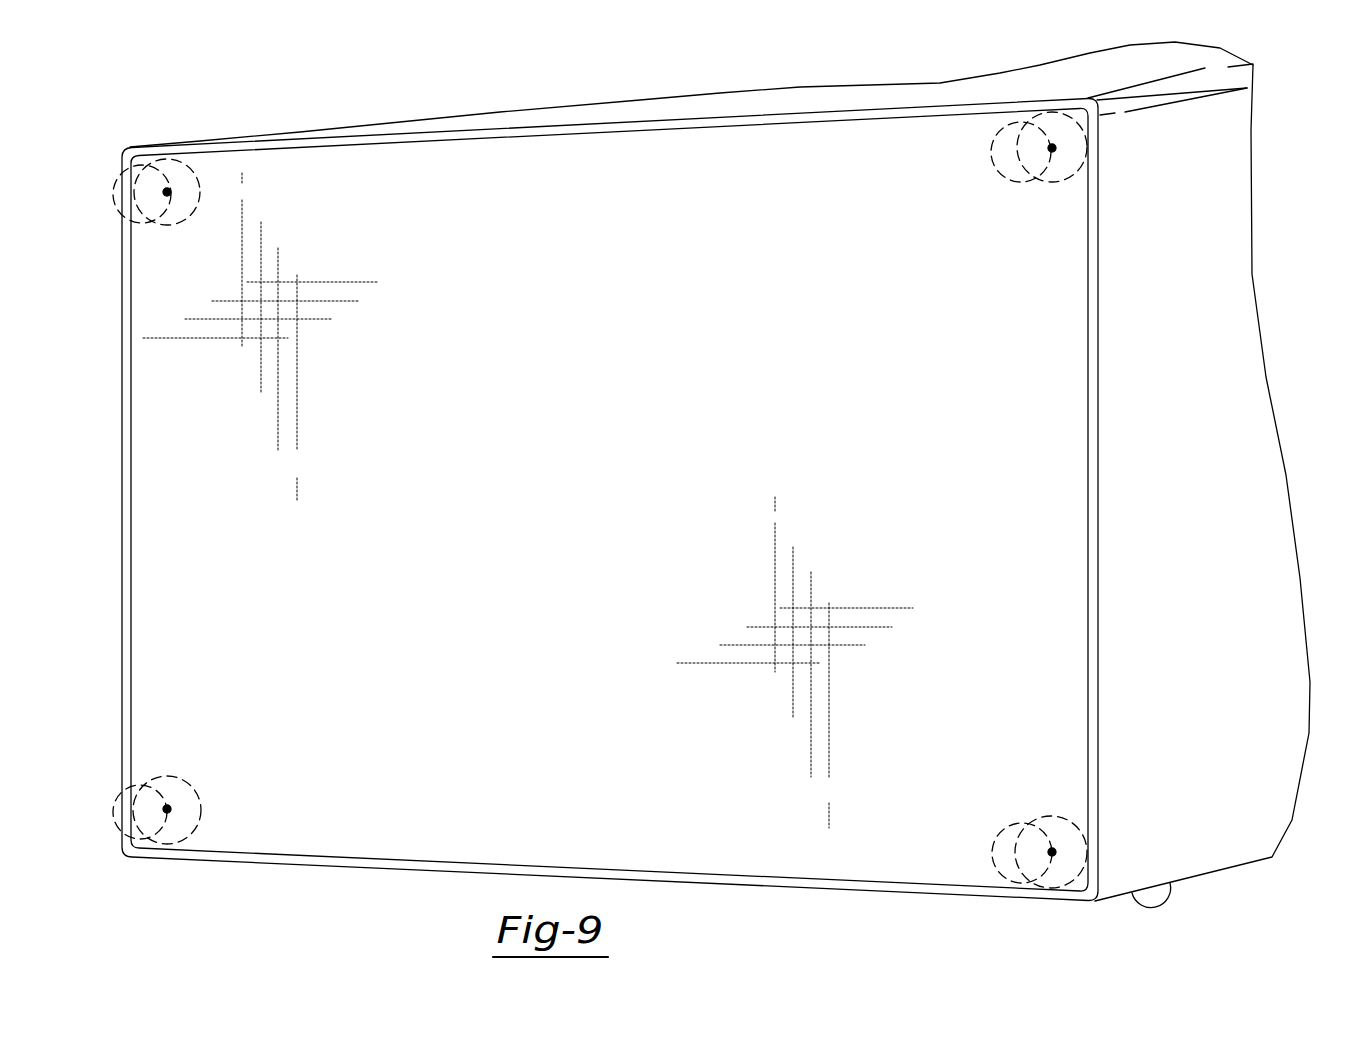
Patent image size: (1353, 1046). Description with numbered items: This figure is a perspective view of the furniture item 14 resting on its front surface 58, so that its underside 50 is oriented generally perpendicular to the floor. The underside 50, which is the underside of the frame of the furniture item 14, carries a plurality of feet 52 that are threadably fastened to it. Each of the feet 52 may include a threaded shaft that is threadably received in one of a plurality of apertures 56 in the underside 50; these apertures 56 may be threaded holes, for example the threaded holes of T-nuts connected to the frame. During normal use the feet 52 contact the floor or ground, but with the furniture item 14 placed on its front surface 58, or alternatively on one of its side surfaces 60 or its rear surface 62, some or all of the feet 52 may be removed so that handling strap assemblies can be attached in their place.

The furniture item 14 is at (364, 116).
The underside 50 is at (466, 513).
The feet 52 is at (113, 188).
The apertures 56 is at (170, 192).
The front surface 58 is at (1170, 882).
The side surfaces 60 is at (1222, 378).
The rear surface 62 is at (608, 117).